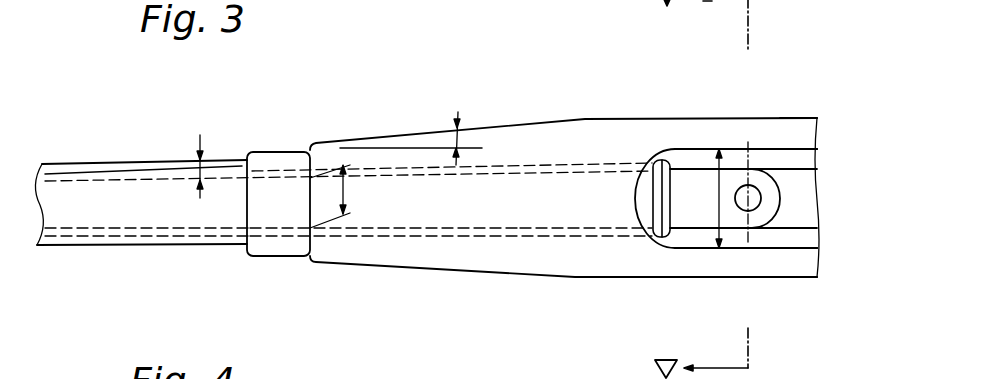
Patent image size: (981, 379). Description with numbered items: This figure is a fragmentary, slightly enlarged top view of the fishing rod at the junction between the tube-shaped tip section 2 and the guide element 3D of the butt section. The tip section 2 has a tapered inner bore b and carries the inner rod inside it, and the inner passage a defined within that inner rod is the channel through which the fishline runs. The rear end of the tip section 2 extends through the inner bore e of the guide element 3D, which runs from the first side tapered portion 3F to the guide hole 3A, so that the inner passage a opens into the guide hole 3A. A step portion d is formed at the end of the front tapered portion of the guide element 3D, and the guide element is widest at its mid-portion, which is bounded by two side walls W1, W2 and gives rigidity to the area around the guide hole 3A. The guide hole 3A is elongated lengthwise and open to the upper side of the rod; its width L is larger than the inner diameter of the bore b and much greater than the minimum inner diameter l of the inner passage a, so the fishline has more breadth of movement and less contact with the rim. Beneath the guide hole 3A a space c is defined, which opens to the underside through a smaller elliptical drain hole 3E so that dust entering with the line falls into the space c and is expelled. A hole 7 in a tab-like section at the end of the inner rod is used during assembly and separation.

The tip section 2 is at (93, 160).
The step portion d is at (285, 152).
The tapered inner bore b is at (167, 237).
The first side tapered portion 3F is at (520, 123).
The inner diameter of the inner passage l is at (347, 188).
The inner bore e is at (503, 237).
The inner passage a is at (566, 232).
The guide element 3D is at (782, 114).
The space c is at (692, 236).
The hole 7 is at (757, 203).
The width of the guide hole L is at (720, 212).
The guide hole 3A is at (752, 150).
The drain hole 3E is at (805, 231).
The side wall W1 is at (797, 134).
The side wall W2 is at (806, 264).